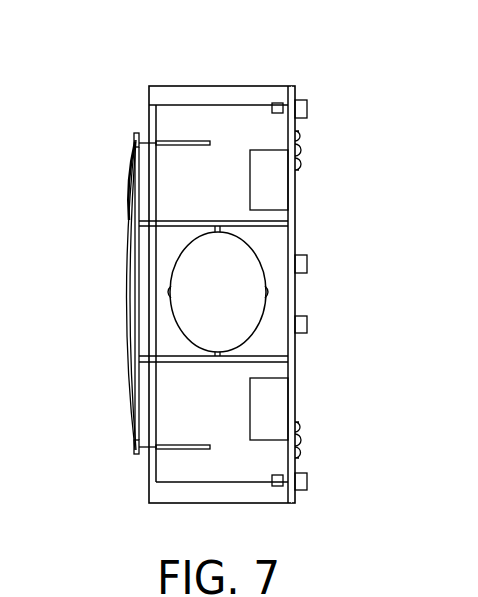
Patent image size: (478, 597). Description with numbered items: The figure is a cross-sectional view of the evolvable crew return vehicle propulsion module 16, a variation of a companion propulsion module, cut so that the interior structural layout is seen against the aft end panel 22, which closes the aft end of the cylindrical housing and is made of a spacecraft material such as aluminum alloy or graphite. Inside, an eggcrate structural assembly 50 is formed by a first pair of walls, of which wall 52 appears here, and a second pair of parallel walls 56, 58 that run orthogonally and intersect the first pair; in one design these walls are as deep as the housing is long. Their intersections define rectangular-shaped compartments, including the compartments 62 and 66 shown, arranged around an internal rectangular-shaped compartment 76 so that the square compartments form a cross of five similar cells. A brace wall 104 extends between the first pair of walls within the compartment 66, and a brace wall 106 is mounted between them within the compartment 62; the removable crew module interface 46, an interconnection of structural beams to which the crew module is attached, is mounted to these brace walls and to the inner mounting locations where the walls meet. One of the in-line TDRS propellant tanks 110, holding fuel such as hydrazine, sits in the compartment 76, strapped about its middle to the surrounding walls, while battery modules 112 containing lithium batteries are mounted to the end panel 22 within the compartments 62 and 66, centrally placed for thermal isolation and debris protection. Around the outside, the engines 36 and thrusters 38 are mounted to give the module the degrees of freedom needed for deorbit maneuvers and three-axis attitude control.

The propulsion module 16 is at (378, 85).
The aft end panel 22 is at (297, 211).
The engines 36 is at (311, 91).
The thrusters 38 is at (303, 158).
The crew module interface 46 is at (119, 211).
The eggcrate structural assembly 50 is at (277, 237).
The first wall 52 is at (225, 131).
The second wall 56 is at (185, 218).
The second wall 58 is at (255, 358).
The rectangular-shaped compartment 62 is at (272, 457).
The rectangular-shaped compartment 66 is at (258, 135).
The internal rectangular-shaped compartment 76 is at (278, 277).
The brace wall 104 is at (190, 134).
The brace wall 106 is at (176, 452).
The propellant tanks 110 is at (188, 303).
The battery modules 112 is at (253, 457).